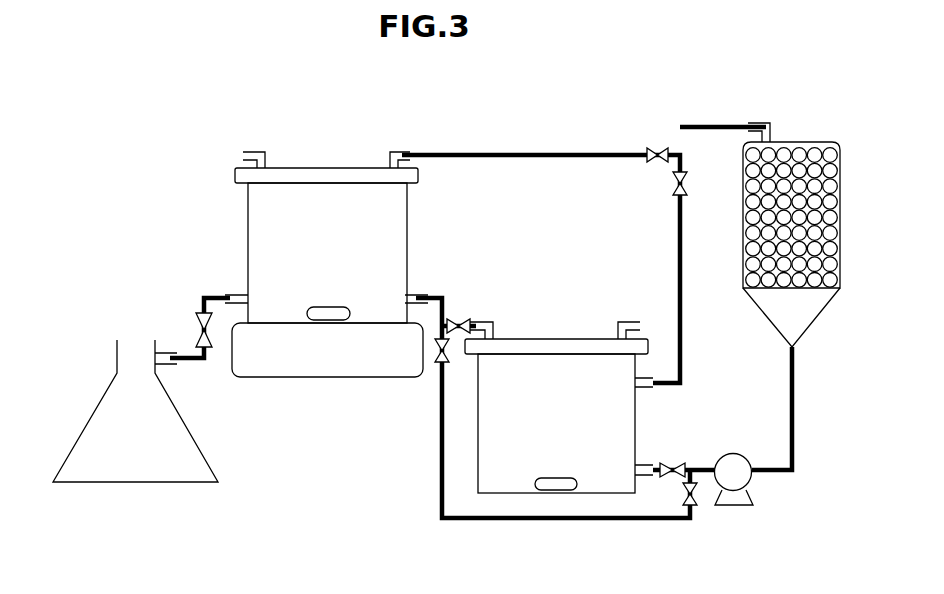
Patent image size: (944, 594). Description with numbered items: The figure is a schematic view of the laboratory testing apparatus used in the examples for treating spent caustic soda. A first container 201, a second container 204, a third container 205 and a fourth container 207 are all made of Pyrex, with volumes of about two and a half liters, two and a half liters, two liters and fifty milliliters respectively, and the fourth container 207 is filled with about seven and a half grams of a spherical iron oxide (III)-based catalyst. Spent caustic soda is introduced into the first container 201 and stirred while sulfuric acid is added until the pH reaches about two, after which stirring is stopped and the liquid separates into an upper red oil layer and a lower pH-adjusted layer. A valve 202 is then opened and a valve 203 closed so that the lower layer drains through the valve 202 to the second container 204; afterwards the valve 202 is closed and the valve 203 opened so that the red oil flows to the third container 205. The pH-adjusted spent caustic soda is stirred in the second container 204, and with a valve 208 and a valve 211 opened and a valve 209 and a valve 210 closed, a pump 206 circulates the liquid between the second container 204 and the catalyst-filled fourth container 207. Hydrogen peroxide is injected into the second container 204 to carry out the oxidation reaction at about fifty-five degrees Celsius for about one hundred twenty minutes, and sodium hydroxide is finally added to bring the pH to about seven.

The first container 201 is at (273, 228).
The valve 202 is at (462, 318).
The valve 203 is at (197, 325).
The second container 204 is at (507, 477).
The third container 205 is at (113, 416).
The pump 206 is at (733, 468).
The fourth container 207 is at (805, 143).
The valve 208 is at (672, 462).
The valve 209 is at (436, 355).
The valve 210 is at (654, 148).
The valve 211 is at (673, 185).